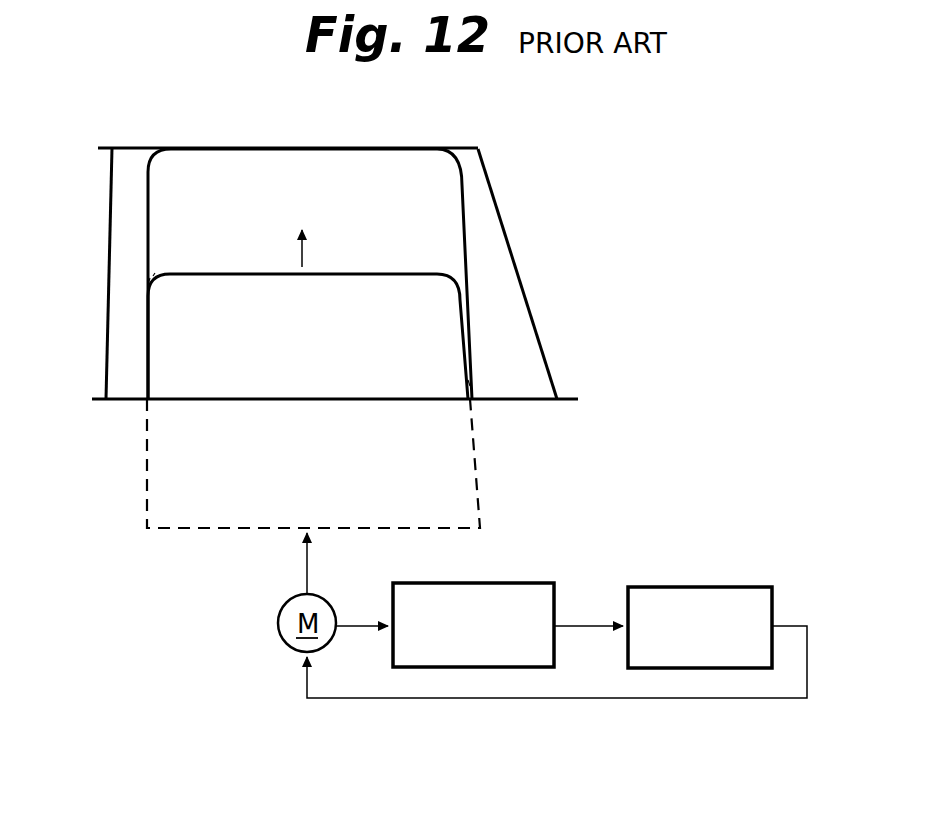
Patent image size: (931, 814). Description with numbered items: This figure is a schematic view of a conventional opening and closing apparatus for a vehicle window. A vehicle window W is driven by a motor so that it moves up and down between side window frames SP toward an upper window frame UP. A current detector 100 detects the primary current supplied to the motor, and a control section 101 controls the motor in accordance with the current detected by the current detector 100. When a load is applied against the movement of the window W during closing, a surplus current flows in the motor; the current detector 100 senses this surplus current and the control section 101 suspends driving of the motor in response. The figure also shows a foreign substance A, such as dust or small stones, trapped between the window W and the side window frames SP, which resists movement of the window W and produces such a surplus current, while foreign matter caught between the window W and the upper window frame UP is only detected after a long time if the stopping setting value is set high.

The current detector 100 is at (523, 583).
The control section 101 is at (695, 587).
The side window frame SP is at (118, 242).
The upper window frame UP is at (323, 130).
The vehicle window W is at (380, 276).
The foreign substance A is at (150, 276).